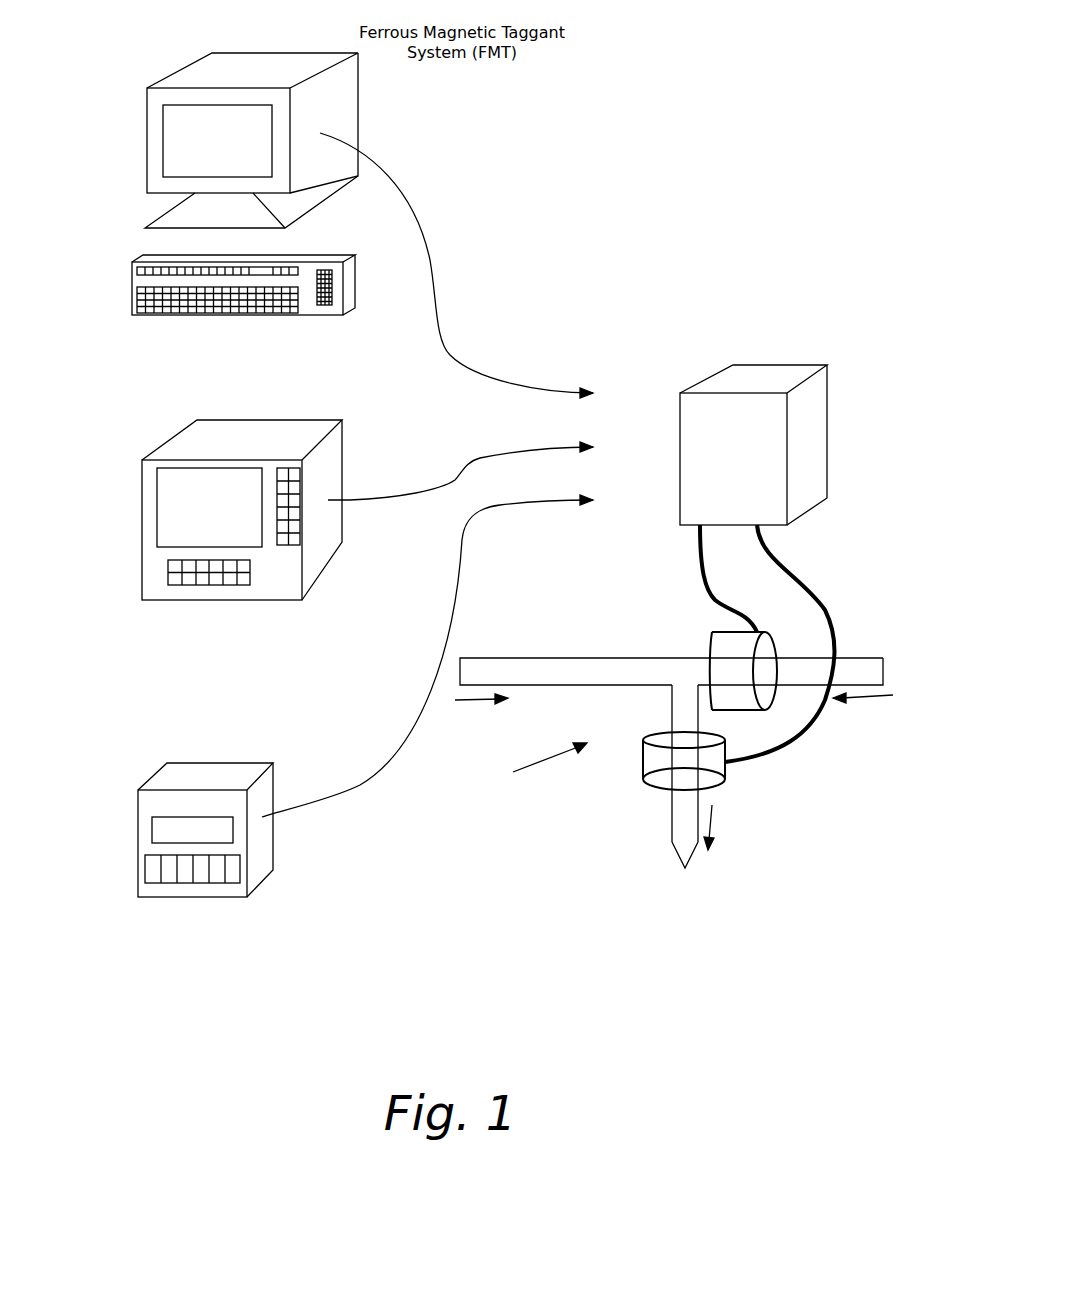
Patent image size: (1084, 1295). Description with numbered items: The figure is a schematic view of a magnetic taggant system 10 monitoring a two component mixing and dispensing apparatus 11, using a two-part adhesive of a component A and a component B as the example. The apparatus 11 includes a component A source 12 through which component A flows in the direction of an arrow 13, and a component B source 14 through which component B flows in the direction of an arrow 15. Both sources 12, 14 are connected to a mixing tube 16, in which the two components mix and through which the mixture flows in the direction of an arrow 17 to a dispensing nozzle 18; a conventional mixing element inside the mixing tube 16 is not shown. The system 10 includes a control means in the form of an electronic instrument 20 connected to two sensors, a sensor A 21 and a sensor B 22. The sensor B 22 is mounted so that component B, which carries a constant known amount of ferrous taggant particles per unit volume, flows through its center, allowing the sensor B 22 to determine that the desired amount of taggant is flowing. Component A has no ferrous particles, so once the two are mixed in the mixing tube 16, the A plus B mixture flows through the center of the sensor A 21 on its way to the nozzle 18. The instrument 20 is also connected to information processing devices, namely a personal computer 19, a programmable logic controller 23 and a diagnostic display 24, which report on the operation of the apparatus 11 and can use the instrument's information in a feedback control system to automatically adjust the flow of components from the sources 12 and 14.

The system 10 is at (686, 253).
The two component mixing and dispensing apparatus 11 is at (546, 794).
The component "A" source 12 is at (565, 658).
The arrow 13 is at (470, 702).
The component "B" source 14 is at (838, 657).
The arrow 15 is at (863, 698).
The mixing tube 16 is at (670, 809).
The arrow 17 is at (712, 812).
The dispensing nozzle 18 is at (675, 856).
The personal computer 19 is at (178, 80).
The electronic instrument 20 is at (817, 395).
The sensor "A" 21 is at (650, 732).
The sensor "B" 22 is at (718, 634).
The programmable logic controller 23 is at (183, 447).
The diagnostic display 24 is at (165, 782).